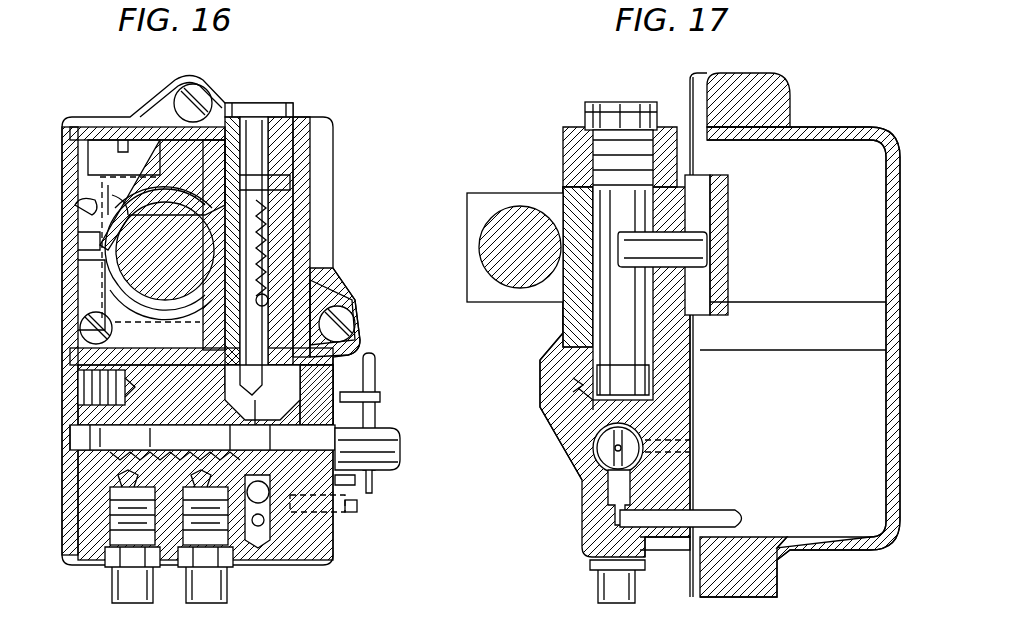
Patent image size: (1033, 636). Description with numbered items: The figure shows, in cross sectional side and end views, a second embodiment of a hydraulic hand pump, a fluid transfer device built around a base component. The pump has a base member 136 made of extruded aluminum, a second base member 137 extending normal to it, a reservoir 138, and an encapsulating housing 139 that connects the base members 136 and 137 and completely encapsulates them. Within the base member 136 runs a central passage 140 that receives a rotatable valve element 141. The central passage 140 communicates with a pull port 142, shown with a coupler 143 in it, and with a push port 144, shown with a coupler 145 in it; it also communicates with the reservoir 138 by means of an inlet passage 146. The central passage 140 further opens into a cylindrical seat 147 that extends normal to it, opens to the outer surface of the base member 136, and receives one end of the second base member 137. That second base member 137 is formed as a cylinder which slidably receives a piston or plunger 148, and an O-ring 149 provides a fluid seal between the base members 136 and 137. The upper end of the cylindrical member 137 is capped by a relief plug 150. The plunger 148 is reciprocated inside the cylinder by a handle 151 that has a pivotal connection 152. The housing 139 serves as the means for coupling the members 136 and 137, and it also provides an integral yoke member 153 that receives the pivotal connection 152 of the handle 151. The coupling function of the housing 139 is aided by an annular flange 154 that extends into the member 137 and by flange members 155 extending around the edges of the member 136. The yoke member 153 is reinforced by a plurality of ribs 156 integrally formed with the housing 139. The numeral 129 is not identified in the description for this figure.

In FIG. 17, the body portion 129 is at (590, 473).
In FIG. 16, the base member 136 is at (290, 530).
In FIG. 17, the base member 136 is at (572, 432).
In FIG. 16, the second base member 137 is at (297, 218).
In FIG. 17, the second base member 137 is at (570, 310).
In FIG. 17, the reservoir 138 is at (828, 545).
In FIG. 16, the encapsulating housing 139 is at (310, 195).
In FIG. 17, the encapsulating housing 139 is at (695, 420).
In FIG. 16, the central passage 140 is at (80, 428).
In FIG. 17, the rotatable valve element 141 is at (577, 485).
In FIG. 16, the pull port 142 is at (128, 518).
In FIG. 16, the coupler 143 is at (130, 590).
In FIG. 16, the push port 144 is at (215, 527).
In FIG. 16, the coupler 145 is at (205, 593).
In FIG. 17, the coupler 145 is at (610, 585).
In FIG. 16, the inlet passage 146 is at (265, 495).
In FIG. 17, the inlet passage 146 is at (645, 557).
In FIG. 16, the cylindrical seat 147 is at (300, 395).
In FIG. 17, the cylindrical seat 147 is at (578, 388).
In FIG. 16, the plunger 148 is at (292, 285).
In FIG. 17, the plunger 148 is at (603, 200).
In FIG. 16, the O-ring 149 is at (330, 378).
In FIG. 17, the O-ring 149 is at (573, 385).
In FIG. 16, the relief plug 150 is at (278, 103).
In FIG. 17, the relief plug 150 is at (627, 100).
In FIG. 17, the handle 151 is at (467, 222).
In FIG. 16, the pivotal connection 152 is at (135, 228).
In FIG. 16, the yoke member 153 is at (110, 288).
In FIG. 16, the annular flange 154 is at (312, 310).
In FIG. 17, the annular flange 154 is at (690, 333).
In FIG. 16, the flange members 155 is at (335, 405).
In FIG. 16, the ribs 156 is at (160, 158).